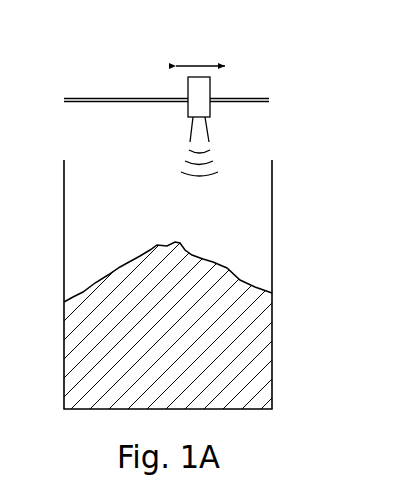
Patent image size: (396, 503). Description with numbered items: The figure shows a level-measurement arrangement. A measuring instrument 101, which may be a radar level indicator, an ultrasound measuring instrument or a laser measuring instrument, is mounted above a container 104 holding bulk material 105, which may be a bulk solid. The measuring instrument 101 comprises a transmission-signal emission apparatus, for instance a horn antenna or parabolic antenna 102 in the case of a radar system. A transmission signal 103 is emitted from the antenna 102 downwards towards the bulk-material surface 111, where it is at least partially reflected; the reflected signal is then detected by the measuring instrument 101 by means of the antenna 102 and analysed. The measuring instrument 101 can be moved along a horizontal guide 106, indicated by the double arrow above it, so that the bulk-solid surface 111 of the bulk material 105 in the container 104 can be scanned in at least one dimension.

The measuring instrument 101 is at (203, 86).
The antenna 102 is at (210, 128).
The transmission signal 103 is at (200, 177).
The container 104 is at (272, 282).
The bulk material 105 is at (258, 367).
The horizontal guide 106 is at (100, 98).
The bulk-material surface 111 is at (95, 283).